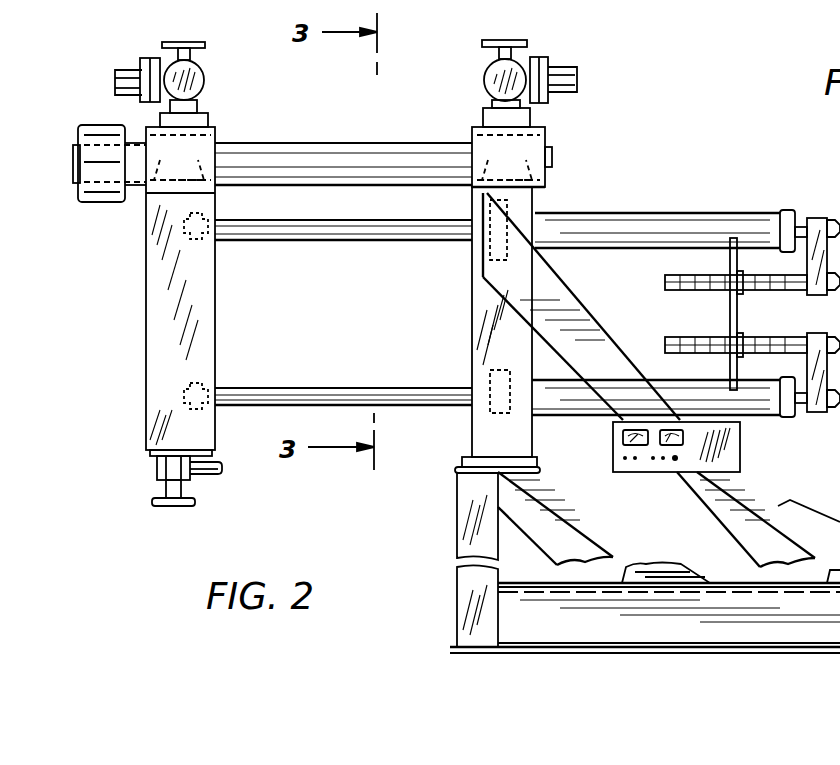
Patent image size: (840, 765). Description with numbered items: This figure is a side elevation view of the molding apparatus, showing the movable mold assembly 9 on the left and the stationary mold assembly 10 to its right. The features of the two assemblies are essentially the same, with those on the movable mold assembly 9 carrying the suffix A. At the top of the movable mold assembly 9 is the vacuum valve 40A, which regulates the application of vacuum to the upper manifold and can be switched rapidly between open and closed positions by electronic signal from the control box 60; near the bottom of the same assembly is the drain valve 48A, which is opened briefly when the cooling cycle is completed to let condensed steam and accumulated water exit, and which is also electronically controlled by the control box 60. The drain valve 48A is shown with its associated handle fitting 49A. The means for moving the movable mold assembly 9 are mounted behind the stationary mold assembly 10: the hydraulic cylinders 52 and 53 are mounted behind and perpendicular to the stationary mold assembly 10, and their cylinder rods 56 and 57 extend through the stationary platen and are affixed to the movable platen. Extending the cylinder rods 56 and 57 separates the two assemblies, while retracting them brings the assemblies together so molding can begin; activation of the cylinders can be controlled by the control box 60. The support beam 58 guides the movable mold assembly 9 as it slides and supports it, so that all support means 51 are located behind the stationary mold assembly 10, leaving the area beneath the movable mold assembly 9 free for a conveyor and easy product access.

The movable mold assembly 9 is at (220, 330).
The stationary mold assembly 10 is at (465, 324).
The vacuum valve 40A is at (195, 78).
The drain valve 48A is at (159, 470).
The lock handle 49A is at (205, 476).
The support means 51 is at (605, 348).
The hydraulic cylinder 52 is at (627, 227).
The hydraulic cylinder 53 is at (560, 409).
The cylinder rod 56 is at (298, 208).
The cylinder rod 57 is at (328, 376).
The support beam 58 is at (302, 130).
The control box 60 is at (697, 452).